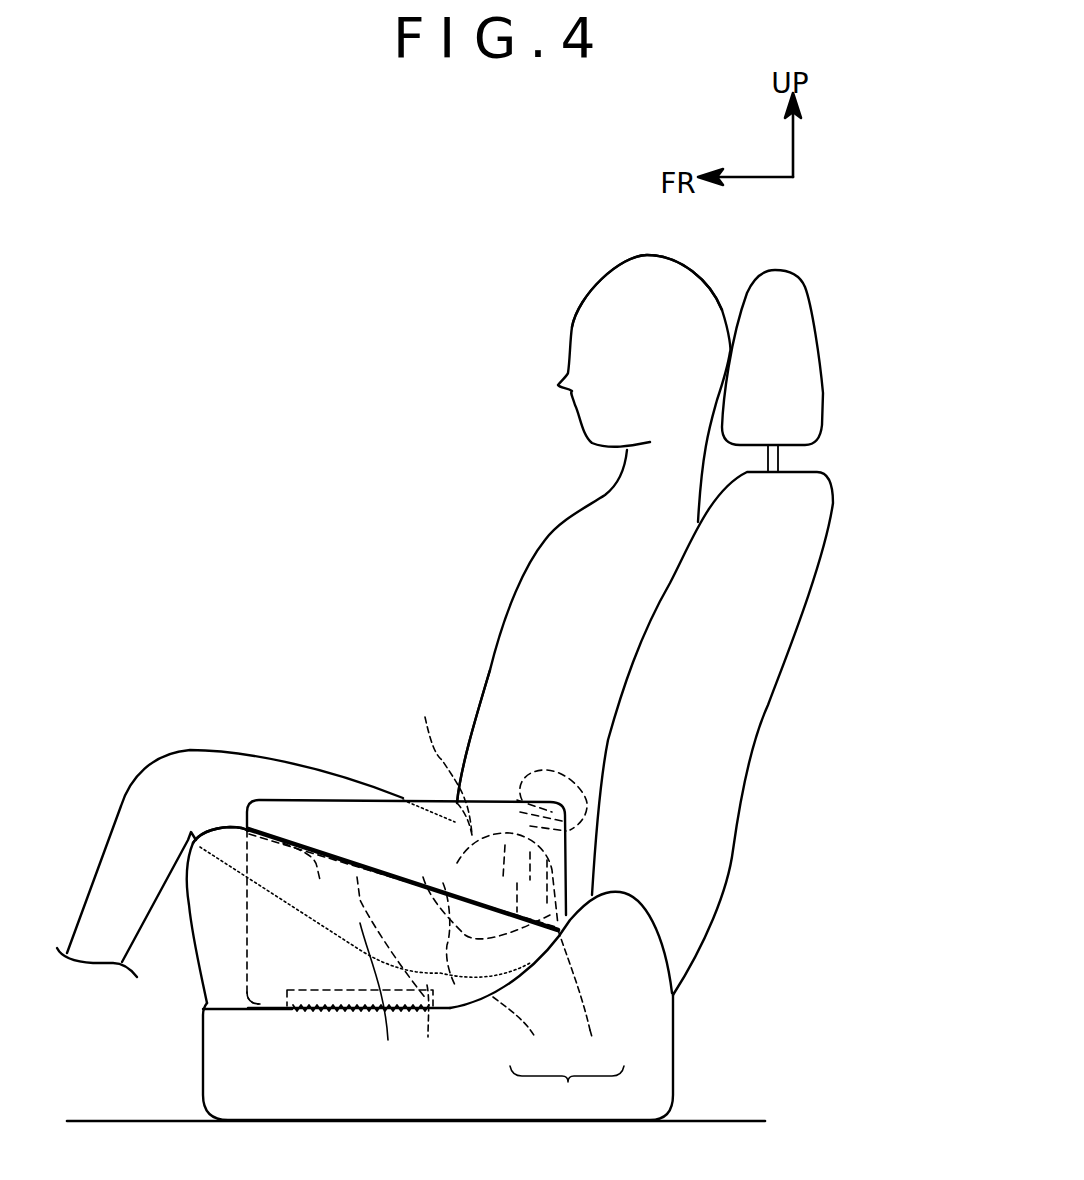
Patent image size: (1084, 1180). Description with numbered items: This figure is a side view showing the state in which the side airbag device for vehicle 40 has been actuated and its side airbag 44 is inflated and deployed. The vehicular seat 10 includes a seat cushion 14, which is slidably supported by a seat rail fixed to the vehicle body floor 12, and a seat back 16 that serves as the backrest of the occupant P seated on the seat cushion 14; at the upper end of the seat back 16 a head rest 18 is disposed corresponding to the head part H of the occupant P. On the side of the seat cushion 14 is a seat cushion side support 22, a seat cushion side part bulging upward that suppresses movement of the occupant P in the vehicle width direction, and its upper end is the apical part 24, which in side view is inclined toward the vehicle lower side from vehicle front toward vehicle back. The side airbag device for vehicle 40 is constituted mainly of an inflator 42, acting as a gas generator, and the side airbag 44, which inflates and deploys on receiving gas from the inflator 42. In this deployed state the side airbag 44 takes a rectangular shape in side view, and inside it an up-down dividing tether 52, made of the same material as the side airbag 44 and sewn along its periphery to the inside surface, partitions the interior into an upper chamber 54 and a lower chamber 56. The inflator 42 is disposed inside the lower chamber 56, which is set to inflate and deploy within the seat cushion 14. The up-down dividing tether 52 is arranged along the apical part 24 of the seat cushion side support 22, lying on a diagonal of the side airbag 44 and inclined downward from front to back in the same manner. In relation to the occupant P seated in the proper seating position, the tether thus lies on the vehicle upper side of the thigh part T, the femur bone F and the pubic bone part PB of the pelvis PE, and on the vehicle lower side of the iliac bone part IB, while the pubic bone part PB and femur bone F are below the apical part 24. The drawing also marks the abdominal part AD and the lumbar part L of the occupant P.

The vehicular seat 10 is at (496, 687).
The vehicle body floor 12 is at (703, 1118).
The seat cushion 14 is at (210, 940).
The seat back 16 is at (745, 718).
The head rest 18 is at (800, 302).
The seat cushion side support 22 is at (227, 836).
The apical part 24 is at (337, 852).
The side airbag device for vehicle 40 is at (332, 901).
The inflator 42 is at (307, 1008).
The side airbag 44 is at (267, 813).
The up-down dividing tether 52 is at (369, 921).
The upper chamber 54 is at (297, 813).
The lower chamber 56 is at (260, 1008).
The occupant P is at (520, 573).
The head part H is at (592, 285).
The abdominal part AD is at (473, 744).
The lumbar part L is at (444, 760).
The thigh part T is at (379, 997).
The femur bone F is at (427, 1028).
The pubic bone part PB is at (526, 1034).
The iliac bone part IB is at (596, 1050).
The pelvis PE is at (567, 1091).